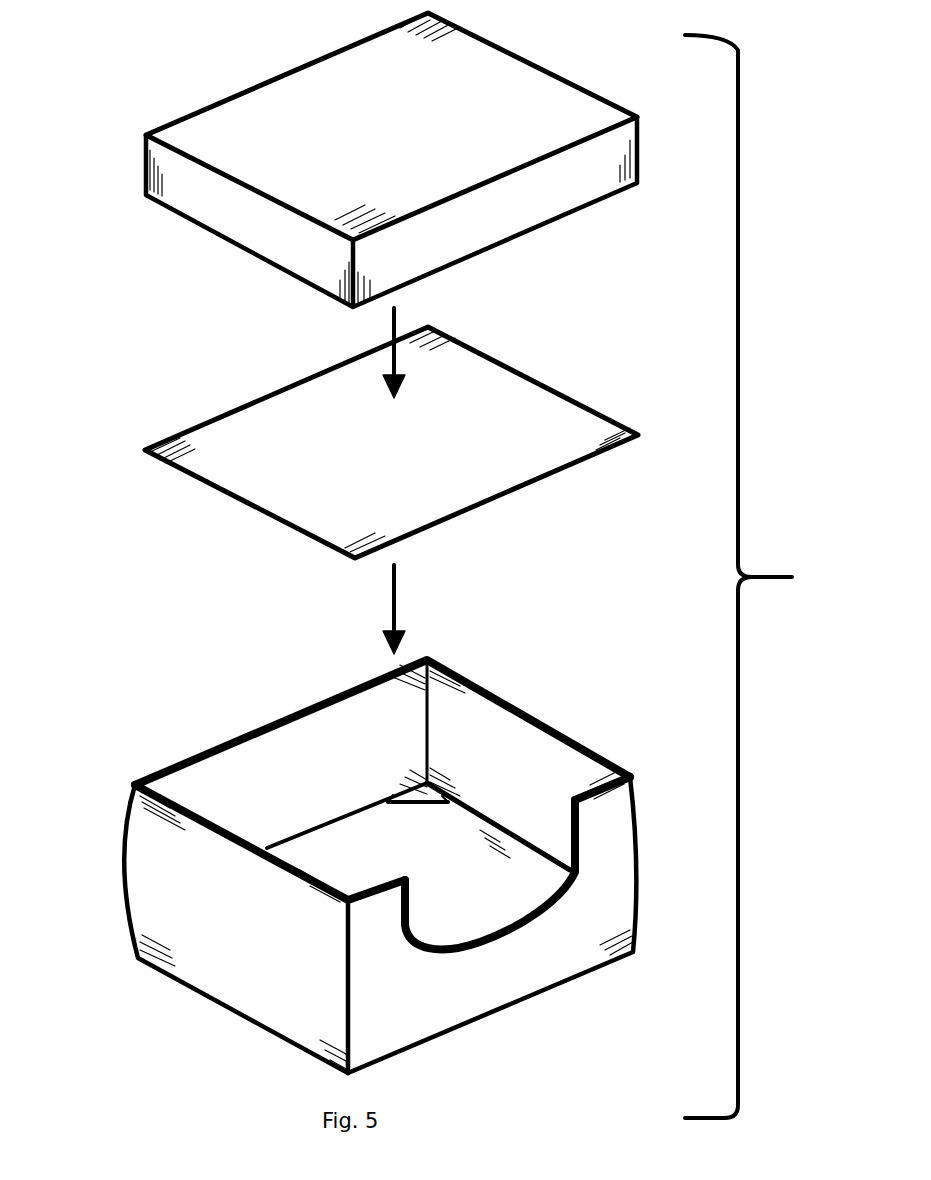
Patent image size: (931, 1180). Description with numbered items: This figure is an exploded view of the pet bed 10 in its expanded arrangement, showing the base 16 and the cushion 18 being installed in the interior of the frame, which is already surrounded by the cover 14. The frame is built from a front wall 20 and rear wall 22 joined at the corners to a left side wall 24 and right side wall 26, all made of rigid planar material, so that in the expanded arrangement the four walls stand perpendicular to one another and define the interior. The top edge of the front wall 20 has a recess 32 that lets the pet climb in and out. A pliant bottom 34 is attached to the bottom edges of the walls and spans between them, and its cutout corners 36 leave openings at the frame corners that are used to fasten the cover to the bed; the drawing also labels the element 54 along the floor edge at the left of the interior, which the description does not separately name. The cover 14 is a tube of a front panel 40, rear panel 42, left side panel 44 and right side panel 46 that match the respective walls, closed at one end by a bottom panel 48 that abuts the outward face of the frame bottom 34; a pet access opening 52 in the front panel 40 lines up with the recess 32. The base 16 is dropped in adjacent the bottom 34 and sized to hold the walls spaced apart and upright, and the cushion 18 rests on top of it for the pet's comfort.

The pet bed 10 is at (756, 576).
The cover 14 is at (366, 871).
The base 16 is at (147, 451).
The cushion 18 is at (143, 165).
The front wall 20 is at (608, 892).
The rear wall 22 is at (262, 790).
The left side wall 24 is at (240, 1005).
The right side wall 26 is at (528, 778).
The recess 32 is at (552, 922).
The bottom 34 is at (465, 880).
The cutout corners 36 is at (412, 790).
The front panel 40 is at (608, 867).
The rear panel 42 is at (288, 752).
The left side panel 44 is at (218, 960).
The right side panel 46 is at (505, 755).
The bottom panel 48 is at (427, 918).
The pet access opening 52 is at (633, 945).
The floor 54 is at (227, 842).